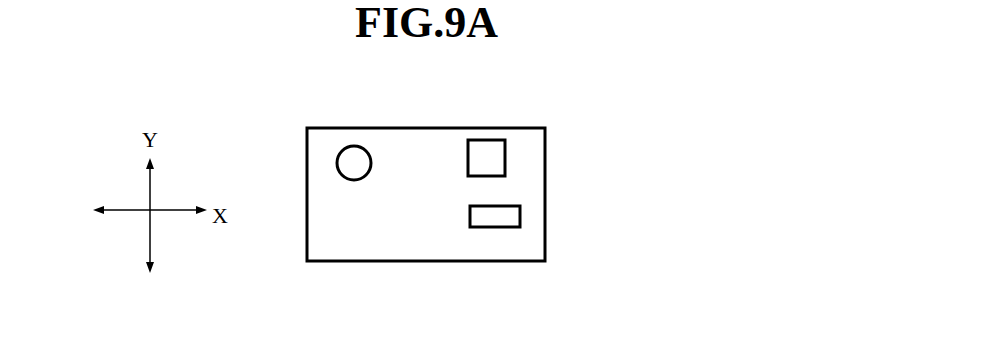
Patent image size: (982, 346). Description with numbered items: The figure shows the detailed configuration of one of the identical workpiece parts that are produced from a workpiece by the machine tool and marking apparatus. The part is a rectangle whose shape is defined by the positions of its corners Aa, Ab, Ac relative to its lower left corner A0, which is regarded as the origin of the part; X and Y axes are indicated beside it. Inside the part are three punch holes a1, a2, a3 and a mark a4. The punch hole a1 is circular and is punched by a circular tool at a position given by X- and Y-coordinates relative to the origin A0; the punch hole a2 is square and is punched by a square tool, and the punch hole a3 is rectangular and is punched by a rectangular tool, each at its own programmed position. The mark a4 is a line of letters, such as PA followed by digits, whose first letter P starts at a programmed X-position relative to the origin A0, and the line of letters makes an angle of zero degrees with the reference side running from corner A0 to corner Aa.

The punch hole a1 is at (354, 160).
The punch hole a2 is at (480, 142).
The punch hole a3 is at (520, 209).
The mark a4 is at (382, 237).
The corner Ac is at (307, 128).
The corner Ab is at (545, 127).
The lower left corner A0 is at (306, 263).
The corner Aa is at (545, 262).